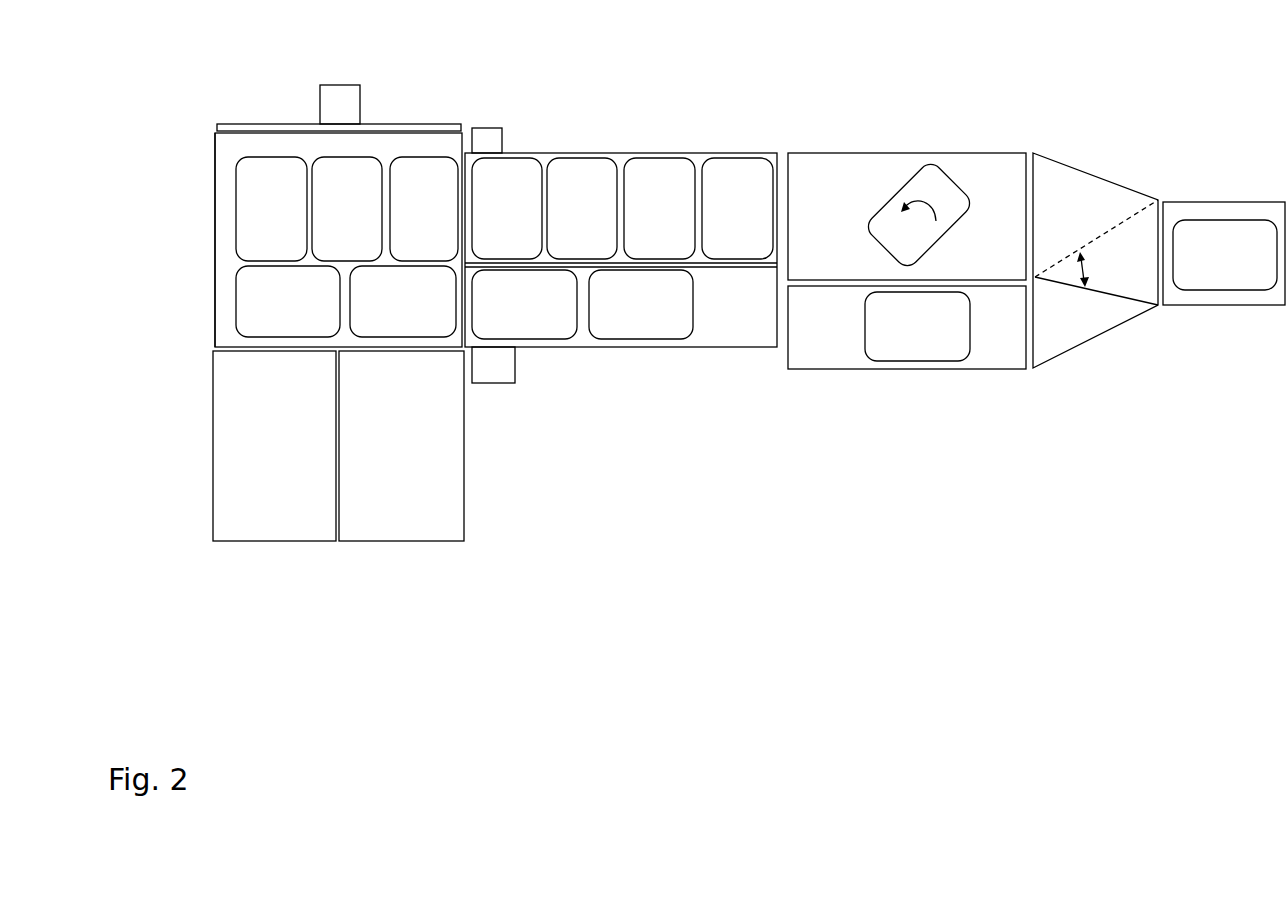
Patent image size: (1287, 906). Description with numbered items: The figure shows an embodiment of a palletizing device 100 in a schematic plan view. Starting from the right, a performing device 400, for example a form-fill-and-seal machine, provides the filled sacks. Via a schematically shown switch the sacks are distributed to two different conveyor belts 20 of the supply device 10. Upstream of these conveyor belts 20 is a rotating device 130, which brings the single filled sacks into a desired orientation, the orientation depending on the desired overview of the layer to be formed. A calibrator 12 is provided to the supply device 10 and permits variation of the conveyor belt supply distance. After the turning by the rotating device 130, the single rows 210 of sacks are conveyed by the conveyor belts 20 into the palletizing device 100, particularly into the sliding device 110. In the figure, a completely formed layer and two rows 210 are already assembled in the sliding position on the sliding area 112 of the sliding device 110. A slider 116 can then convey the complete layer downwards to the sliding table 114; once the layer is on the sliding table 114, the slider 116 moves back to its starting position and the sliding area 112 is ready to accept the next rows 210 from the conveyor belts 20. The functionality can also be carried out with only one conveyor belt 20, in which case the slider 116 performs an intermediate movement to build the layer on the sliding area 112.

The palletizing device 100 is at (128, 136).
The supply device 10 is at (655, 86).
The calibrator 12 is at (481, 128).
The conveyor belt 20 is at (730, 153).
The sliding device 110 is at (298, 102).
The sliding area 112 is at (219, 283).
The sliding table 114 is at (226, 450).
The slider 116 is at (372, 124).
The rotating device 130 is at (880, 132).
The row 210 is at (224, 204).
The performing device 400 is at (1199, 182).